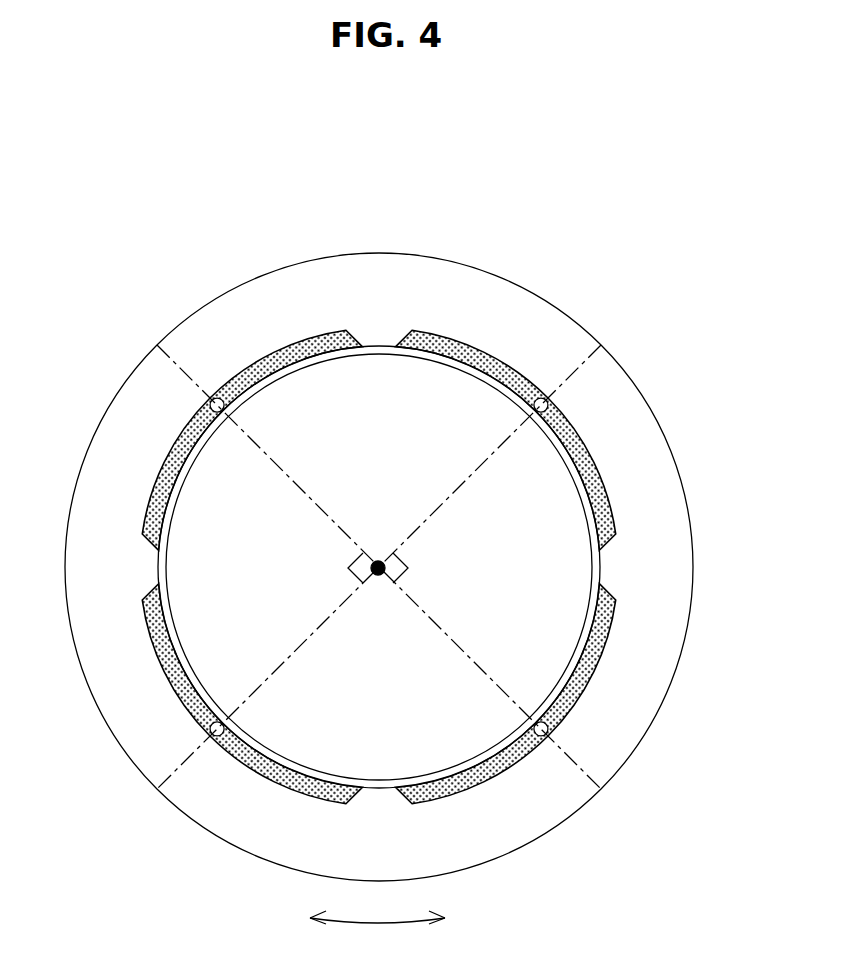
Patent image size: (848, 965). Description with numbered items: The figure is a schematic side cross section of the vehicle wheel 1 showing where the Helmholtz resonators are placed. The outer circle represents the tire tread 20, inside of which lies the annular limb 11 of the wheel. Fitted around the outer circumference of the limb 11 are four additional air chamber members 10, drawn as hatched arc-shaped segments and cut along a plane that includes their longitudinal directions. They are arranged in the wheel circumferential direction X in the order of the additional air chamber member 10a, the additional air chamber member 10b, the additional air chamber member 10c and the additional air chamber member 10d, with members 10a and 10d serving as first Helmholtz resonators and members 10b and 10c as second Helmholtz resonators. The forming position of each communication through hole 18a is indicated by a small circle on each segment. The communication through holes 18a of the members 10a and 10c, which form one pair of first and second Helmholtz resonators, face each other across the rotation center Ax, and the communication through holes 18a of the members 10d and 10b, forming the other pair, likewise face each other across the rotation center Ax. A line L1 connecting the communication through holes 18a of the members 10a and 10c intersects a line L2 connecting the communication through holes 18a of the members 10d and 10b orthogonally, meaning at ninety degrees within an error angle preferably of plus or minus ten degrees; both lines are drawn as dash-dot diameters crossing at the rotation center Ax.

The vehicle wheel 1 is at (382, 205).
The tire tread 20 is at (443, 258).
The limb 11 is at (160, 558).
The additional air chamber member 10 is at (383, 571).
The additional air chamber member 10a is at (254, 358).
The additional air chamber member 10b is at (504, 358).
The additional air chamber member 10c is at (504, 774).
The additional air chamber member 10d is at (254, 774).
The communication through hole 18a is at (190, 420).
The line L1 is at (310, 492).
The line L2 is at (450, 503).
The rotation center Ax is at (378, 580).
The wheel circumferential direction X is at (390, 924).